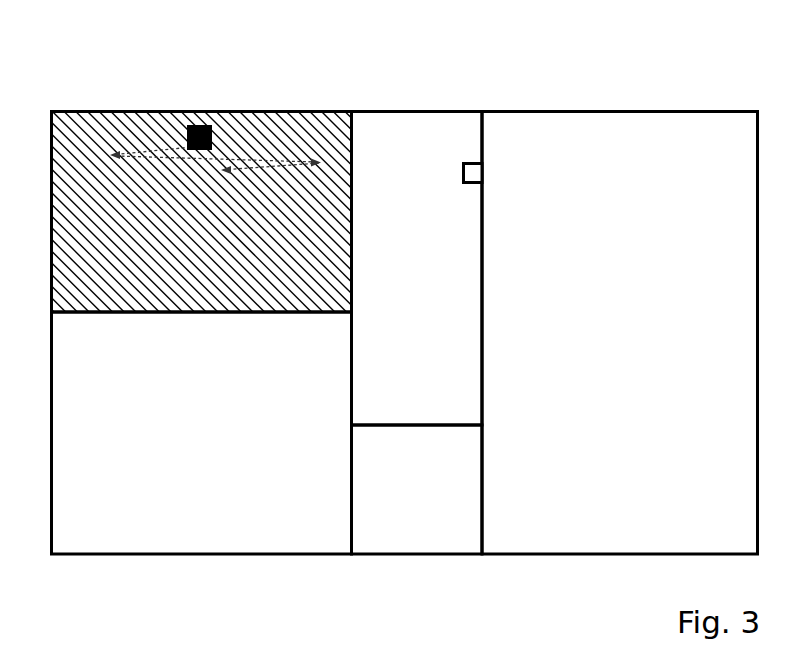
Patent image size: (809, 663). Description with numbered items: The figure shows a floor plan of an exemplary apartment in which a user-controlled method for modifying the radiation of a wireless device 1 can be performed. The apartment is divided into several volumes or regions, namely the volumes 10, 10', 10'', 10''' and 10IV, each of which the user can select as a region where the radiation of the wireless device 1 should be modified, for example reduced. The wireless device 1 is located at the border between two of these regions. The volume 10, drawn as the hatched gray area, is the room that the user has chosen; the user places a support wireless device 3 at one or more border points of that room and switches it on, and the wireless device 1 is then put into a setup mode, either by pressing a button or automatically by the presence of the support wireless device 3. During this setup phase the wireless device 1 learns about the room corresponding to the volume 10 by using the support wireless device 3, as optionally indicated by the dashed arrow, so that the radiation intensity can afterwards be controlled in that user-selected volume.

The wireless device 1 is at (473, 172).
The support wireless device 3 is at (196, 126).
The volume 10 is at (201, 211).
The volume 10' is at (202, 433).
The volume 10'' is at (417, 269).
The volume 10''' is at (417, 489).
The volume 10IV is at (620, 333).